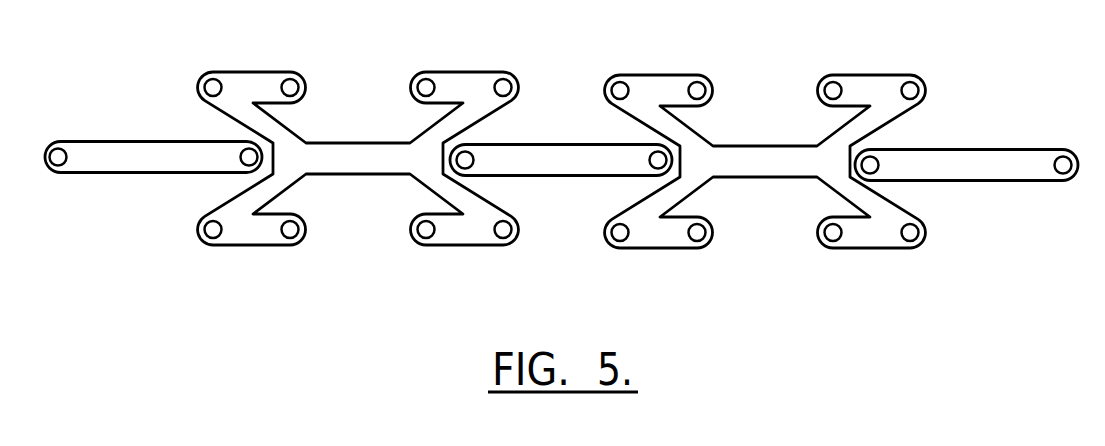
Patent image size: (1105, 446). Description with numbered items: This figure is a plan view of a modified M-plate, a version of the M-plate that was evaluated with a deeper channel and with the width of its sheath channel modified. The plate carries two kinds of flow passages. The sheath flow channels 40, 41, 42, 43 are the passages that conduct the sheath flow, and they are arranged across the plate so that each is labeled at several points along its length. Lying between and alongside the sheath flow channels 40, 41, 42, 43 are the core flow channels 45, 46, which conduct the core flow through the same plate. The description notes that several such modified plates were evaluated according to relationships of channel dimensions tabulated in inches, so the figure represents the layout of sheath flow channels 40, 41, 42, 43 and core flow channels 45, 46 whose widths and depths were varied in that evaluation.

The sheath flow channel 40 is at (357, 142).
The sheath flow channel 41 is at (287, 188).
The sheath flow channel 42 is at (209, 232).
The sheath flow channel 43 is at (258, 72).
The core flow channel 45 is at (147, 142).
The core flow channel 46 is at (54, 172).